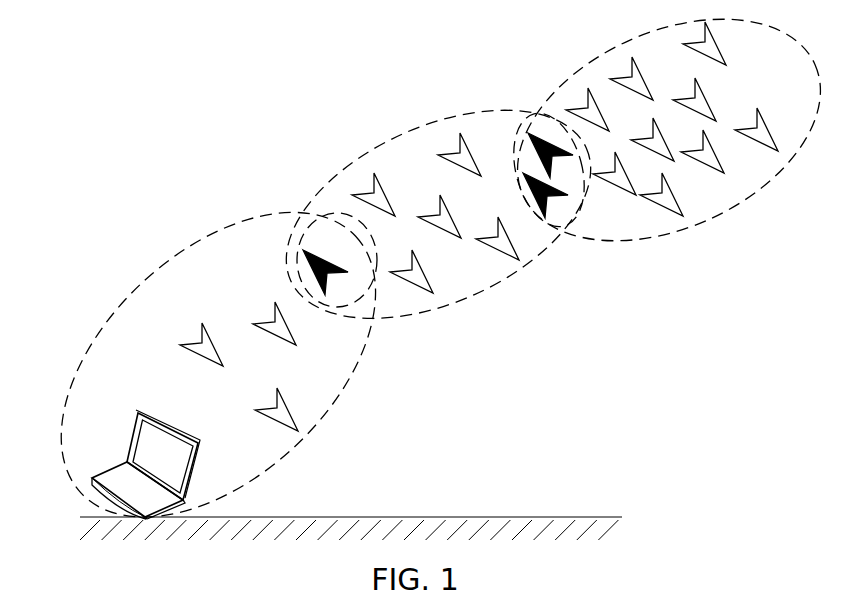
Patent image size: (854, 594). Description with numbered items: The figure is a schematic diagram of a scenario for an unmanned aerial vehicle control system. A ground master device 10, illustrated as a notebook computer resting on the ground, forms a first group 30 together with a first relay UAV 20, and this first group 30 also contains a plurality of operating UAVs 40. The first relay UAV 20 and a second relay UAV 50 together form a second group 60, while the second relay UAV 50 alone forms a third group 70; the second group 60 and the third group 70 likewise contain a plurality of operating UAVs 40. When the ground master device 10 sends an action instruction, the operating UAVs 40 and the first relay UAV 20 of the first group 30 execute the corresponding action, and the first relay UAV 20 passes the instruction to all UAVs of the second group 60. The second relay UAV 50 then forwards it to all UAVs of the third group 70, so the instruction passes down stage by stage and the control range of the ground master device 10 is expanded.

The ground master device 10 is at (108, 484).
The first relay UAV 20 is at (320, 250).
The first group 30 is at (172, 260).
The operating UAVs 40 is at (290, 412).
The second relay UAV 50 is at (534, 125).
The second group 60 is at (378, 146).
The third group 70 is at (615, 50).